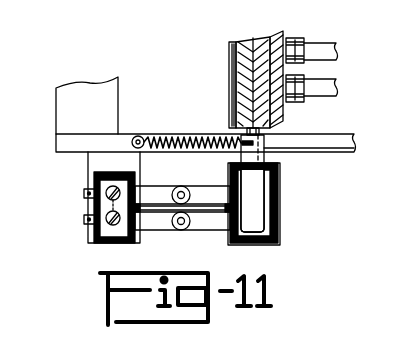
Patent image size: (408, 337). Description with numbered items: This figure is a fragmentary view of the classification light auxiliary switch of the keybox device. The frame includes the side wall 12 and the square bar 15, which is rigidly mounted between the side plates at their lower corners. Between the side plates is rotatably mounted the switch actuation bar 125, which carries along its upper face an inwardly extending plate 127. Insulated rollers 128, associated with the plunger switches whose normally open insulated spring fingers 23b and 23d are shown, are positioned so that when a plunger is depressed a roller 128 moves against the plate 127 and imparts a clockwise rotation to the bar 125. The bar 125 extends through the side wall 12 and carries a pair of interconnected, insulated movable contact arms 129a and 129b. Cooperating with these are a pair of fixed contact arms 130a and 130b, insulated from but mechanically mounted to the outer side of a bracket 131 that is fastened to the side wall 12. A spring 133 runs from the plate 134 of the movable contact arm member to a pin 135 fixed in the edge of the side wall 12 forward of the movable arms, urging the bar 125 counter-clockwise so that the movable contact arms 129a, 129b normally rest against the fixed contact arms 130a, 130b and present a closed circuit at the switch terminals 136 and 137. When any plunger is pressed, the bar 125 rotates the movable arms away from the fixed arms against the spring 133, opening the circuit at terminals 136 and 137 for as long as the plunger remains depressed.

The side wall 12 is at (327, 152).
The square bar 15 is at (120, 92).
The insulated spring finger 23b is at (337, 80).
The insulated spring finger 23d is at (336, 58).
The switch actuation bar 125 is at (254, 37).
The inwardly extending plate 127 is at (279, 38).
The insulated roller 128 is at (304, 41).
The movable contact arm 129a is at (212, 186).
The movable contact arm 129b is at (212, 232).
The fixed contact arm 130a is at (172, 182).
The fixed contact arm 130b is at (166, 233).
The bracket 131 is at (88, 163).
The spring 133 is at (195, 134).
The plate of the movable contact arm member 134 is at (266, 154).
The pin 135 is at (140, 135).
The switch terminal 136 is at (84, 192).
The switch terminal 137 is at (84, 220).